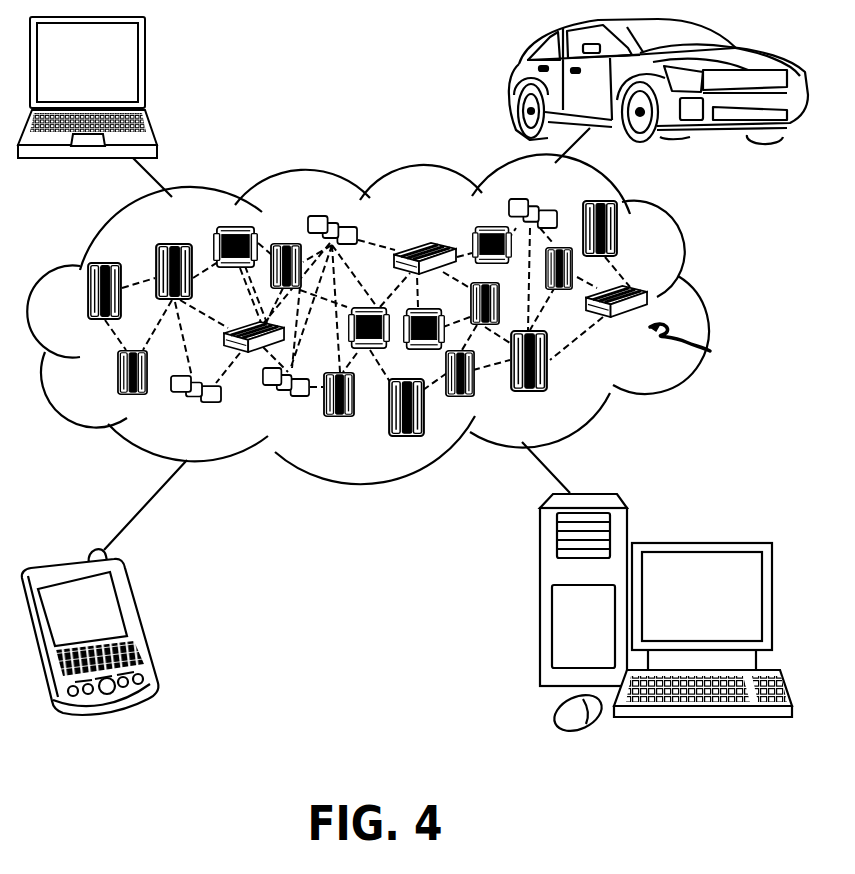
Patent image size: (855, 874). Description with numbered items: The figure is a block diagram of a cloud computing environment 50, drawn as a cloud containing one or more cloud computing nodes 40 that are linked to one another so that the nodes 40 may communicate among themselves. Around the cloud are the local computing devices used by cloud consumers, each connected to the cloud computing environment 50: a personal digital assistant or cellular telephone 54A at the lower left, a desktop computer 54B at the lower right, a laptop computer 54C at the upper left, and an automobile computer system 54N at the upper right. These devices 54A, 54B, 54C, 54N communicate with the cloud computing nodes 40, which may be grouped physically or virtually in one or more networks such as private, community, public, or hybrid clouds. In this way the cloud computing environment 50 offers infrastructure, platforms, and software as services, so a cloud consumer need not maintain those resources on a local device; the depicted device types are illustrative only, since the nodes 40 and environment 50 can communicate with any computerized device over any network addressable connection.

The cloud computing environment 50 is at (699, 303).
The cloud computing nodes 40 is at (690, 342).
The personal digital assistant (PDA) or cellular telephone 54A is at (138, 623).
The desktop computer 54B is at (702, 543).
The laptop computer 54C is at (147, 71).
The automobile computer system 54N is at (515, 81).